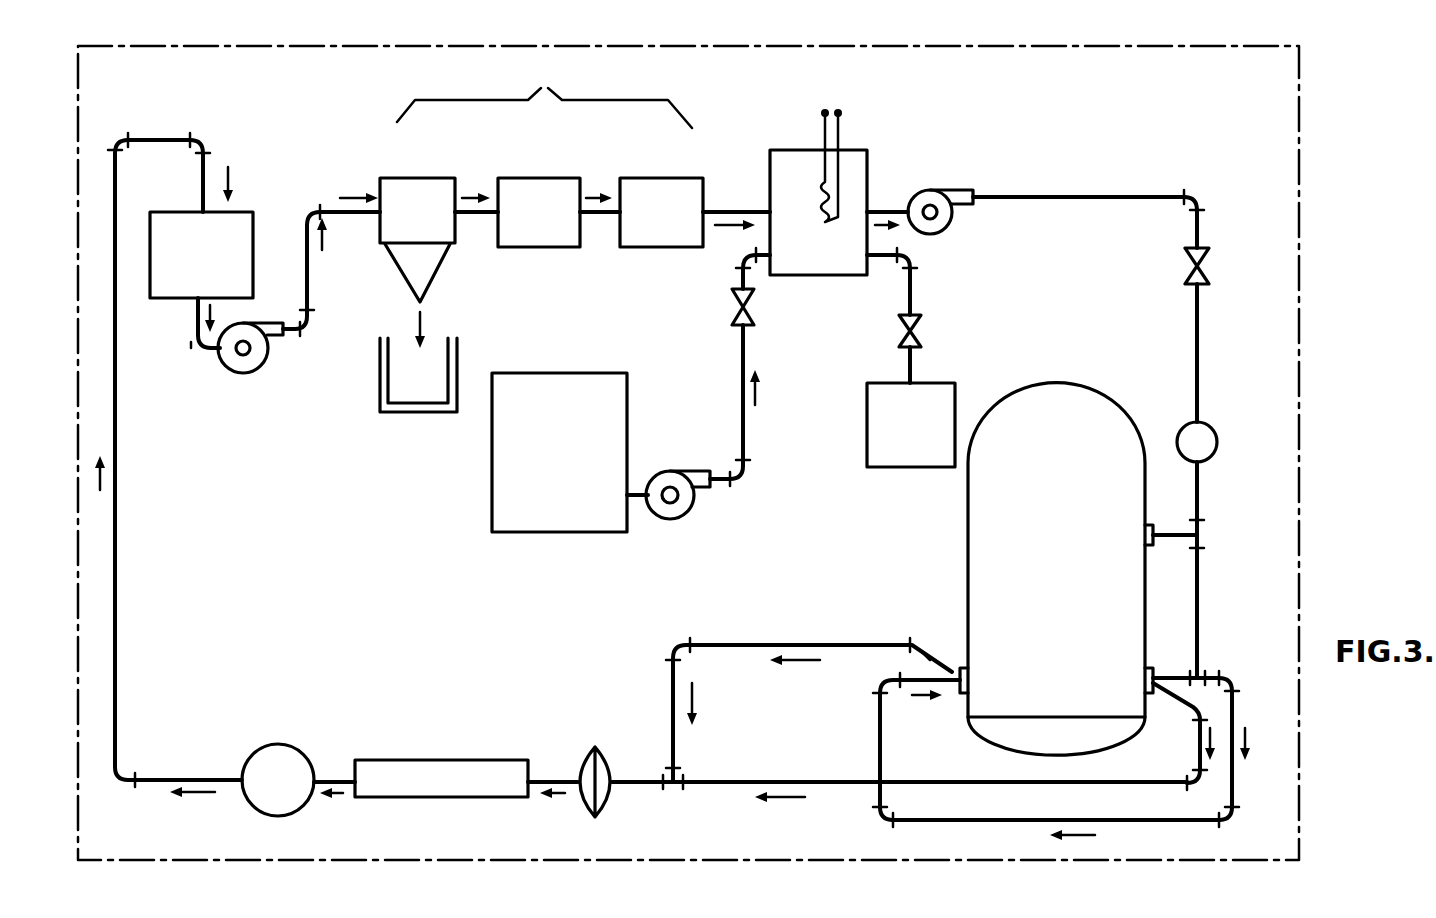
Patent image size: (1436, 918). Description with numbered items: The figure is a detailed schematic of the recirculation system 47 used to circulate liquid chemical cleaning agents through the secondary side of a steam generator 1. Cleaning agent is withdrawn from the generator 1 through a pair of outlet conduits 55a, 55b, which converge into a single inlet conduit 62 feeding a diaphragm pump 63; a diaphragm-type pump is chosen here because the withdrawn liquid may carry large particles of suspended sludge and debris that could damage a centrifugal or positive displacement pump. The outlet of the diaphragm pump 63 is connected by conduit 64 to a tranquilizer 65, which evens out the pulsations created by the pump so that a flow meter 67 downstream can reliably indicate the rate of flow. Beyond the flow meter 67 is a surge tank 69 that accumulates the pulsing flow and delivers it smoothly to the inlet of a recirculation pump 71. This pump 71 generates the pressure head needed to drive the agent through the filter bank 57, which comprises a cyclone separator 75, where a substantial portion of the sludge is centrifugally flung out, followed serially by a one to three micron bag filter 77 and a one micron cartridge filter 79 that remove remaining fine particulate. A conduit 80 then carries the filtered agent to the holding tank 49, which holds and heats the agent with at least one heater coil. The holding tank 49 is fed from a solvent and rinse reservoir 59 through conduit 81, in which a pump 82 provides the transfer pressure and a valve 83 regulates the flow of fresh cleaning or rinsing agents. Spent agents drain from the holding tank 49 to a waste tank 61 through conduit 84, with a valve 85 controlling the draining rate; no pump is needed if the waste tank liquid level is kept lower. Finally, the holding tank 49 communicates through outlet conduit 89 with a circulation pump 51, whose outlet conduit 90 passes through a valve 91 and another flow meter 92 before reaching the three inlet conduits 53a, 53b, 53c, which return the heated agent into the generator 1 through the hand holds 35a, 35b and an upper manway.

The generator 1 is at (1075, 570).
The hand hold 35a is at (1143, 682).
The hand hold 35b is at (970, 677).
The recirculation system 47 is at (162, 126).
The holding tank 49 is at (830, 275).
The circulation pump 51 is at (940, 190).
The inlet conduit 53a is at (1166, 665).
The inlet conduit 53b is at (882, 748).
The inlet conduit 53c is at (1170, 533).
The outlet conduit 55a is at (1180, 705).
The outlet conduit 55b is at (848, 645).
The filter bank 57 is at (544, 94).
The solvent and rinse reservoir 59 is at (548, 532).
The waste tank 61 is at (890, 467).
The inlet conduit 62 is at (645, 780).
The diaphragm pump 63 is at (580, 768).
The conduit 64 is at (211, 778).
The tranquilizer 65 is at (460, 760).
The flow meter 67 is at (290, 742).
The surge tank 69 is at (243, 212).
The recirculation pump 71 is at (265, 370).
The cyclone separator 75 is at (413, 178).
The bag filter 77 is at (535, 178).
The cartridge filter 79 is at (672, 178).
The conduit 80 is at (745, 210).
The conduit 81 is at (745, 432).
The pump 82 is at (680, 515).
The valve 83 is at (733, 310).
The conduit 84 is at (912, 270).
The valve 85 is at (918, 343).
The outlet conduit 89 is at (895, 210).
The outlet conduit 90 is at (1075, 197).
The valve 91 is at (1207, 272).
The flow meter 92 is at (1210, 458).